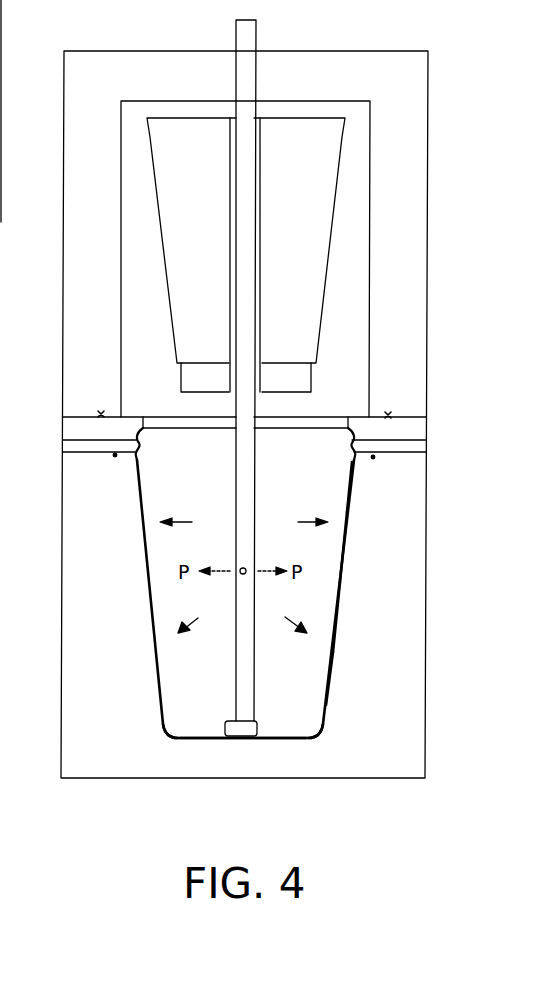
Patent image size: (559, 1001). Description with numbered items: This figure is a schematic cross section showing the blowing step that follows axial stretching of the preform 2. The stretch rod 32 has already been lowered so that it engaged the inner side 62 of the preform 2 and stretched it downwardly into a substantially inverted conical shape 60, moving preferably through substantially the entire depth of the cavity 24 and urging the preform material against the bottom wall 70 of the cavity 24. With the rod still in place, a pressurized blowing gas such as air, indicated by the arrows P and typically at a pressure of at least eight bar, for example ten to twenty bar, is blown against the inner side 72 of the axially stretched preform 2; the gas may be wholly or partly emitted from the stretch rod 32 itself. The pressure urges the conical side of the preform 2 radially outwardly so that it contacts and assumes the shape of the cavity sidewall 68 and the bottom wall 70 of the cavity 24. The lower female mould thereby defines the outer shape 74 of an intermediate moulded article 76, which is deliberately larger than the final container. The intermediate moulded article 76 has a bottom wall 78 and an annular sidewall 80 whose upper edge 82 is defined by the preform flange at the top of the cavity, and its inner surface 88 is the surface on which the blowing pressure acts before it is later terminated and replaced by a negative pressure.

The preform 2 is at (165, 708).
The cavity 24 is at (323, 712).
The stretch rod 32 is at (250, 36).
The substantially inverted conical shape 60 is at (2, 188).
The inner side of the preform 62 is at (2, 43).
The cavity sidewall 68 is at (2, 156).
The bottom wall of the cavity 70 is at (185, 740).
The inner side of the axially stretched preform 72 is at (144, 518).
The outer shape of the intermediate moulded article 74 is at (345, 555).
The intermediate moulded article 76 is at (332, 648).
The bottom wall of the intermediate moulded article 78 is at (267, 740).
The annular sidewall of the intermediate moulded article 80 is at (352, 485).
The upper edge of the annular sidewall 82 is at (348, 435).
The inner surface of the intermediate moulded article 88 is at (325, 700).